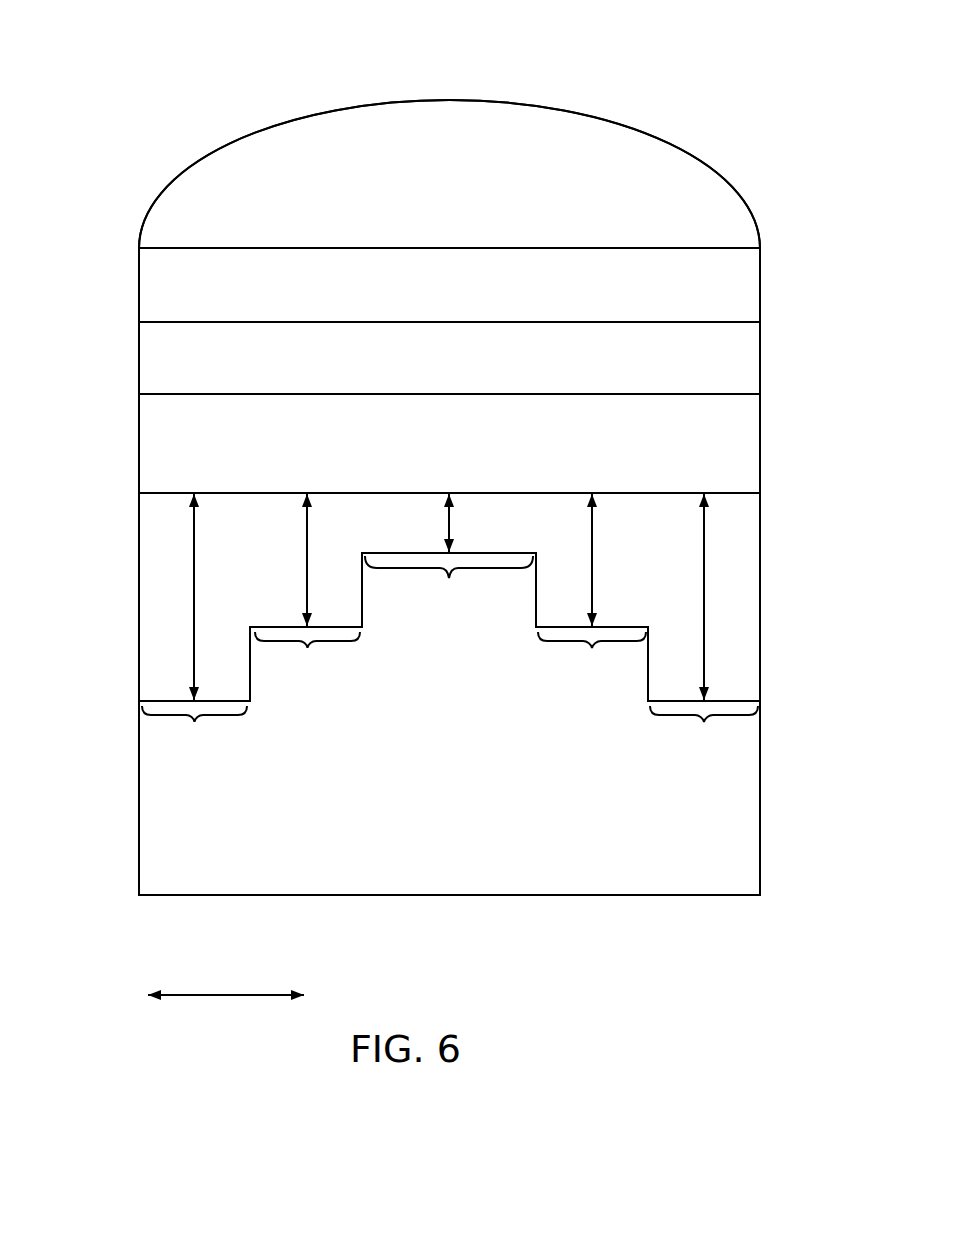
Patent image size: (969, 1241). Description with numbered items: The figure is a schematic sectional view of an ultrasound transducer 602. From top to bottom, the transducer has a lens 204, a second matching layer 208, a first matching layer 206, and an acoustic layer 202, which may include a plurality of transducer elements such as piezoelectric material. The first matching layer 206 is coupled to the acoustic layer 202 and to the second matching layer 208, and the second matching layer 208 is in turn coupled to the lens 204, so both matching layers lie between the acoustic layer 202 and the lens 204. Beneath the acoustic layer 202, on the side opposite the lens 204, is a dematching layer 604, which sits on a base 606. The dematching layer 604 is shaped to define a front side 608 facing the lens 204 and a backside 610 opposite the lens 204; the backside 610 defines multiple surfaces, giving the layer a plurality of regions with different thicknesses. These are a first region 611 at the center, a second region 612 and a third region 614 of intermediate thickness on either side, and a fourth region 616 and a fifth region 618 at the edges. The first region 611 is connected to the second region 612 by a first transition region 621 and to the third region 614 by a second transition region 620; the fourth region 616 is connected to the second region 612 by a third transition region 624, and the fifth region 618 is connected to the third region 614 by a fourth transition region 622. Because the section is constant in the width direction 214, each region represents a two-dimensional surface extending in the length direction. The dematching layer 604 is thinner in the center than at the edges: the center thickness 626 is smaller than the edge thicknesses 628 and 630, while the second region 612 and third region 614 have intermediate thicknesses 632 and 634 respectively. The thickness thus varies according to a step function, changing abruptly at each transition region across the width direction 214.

The ultrasound transducer 602 is at (687, 84).
The lens 204 is at (468, 192).
The second matching layer 208 is at (468, 297).
The first matching layer 206 is at (468, 368).
The acoustic layer 202 is at (468, 456).
The front side 608 is at (176, 491).
The dematching layer 604 is at (762, 556).
The base 606 is at (420, 838).
The backside 610 is at (514, 557).
The first region 611 is at (449, 582).
The second region 612 is at (307, 654).
The third region 614 is at (592, 654).
The fourth region 616 is at (194, 729).
The fifth region 618 is at (704, 728).
The second transition region 620 is at (532, 612).
The first transition region 621 is at (367, 612).
The fourth transition region 622 is at (645, 689).
The third transition region 624 is at (254, 690).
The center thickness 626 is at (455, 522).
The edge thickness 628 is at (198, 594).
The edge thickness 630 is at (706, 613).
The thickness 632 is at (312, 530).
The thickness 634 is at (597, 557).
The width direction 214 is at (226, 993).